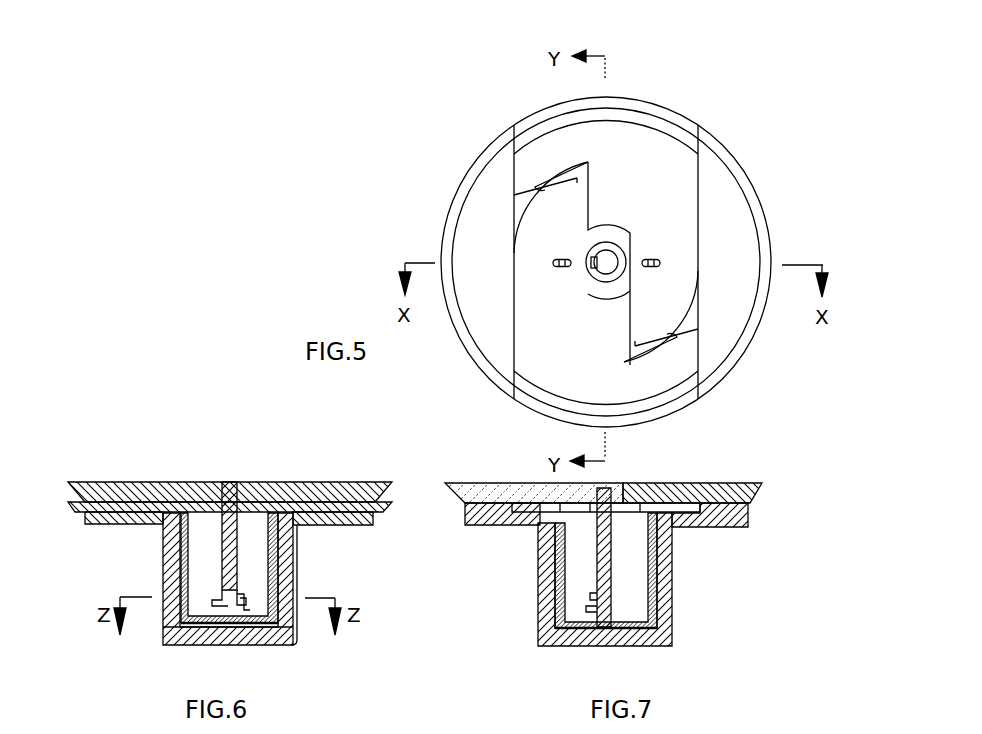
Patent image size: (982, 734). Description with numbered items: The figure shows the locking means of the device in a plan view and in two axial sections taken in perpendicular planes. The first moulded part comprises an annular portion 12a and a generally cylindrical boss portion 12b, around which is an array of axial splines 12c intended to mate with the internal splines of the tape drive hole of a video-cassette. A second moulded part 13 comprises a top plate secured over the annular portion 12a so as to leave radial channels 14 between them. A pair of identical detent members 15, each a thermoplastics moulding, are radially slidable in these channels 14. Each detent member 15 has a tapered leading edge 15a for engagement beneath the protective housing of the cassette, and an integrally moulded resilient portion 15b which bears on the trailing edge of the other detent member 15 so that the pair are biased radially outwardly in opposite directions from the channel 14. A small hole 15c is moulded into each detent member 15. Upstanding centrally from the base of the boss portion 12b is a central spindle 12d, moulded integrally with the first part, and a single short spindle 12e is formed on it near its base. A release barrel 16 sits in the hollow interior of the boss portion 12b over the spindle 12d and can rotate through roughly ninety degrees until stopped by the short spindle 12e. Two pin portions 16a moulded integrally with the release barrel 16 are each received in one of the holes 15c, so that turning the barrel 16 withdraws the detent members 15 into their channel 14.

In FIG. 6, the annular portion 12a is at (362, 526).
In FIG. 6, the boss portion 12b is at (287, 578).
In FIG. 7, the boss portion 12b is at (660, 566).
In FIG. 6, the axial splines 12c is at (297, 632).
In FIG. 6, the central spindle 12d is at (230, 537).
In FIG. 7, the short spindle 12e is at (600, 595).
In FIG. 6, the second moulded part 13 is at (150, 482).
In FIG. 5, the radial channels 14 is at (688, 302).
In FIG. 7, the radial channels 14 is at (699, 527).
In FIG. 5, the detent members 15 is at (658, 140).
In FIG. 5, the tapered leading edge 15a is at (637, 107).
In FIG. 5, the resilient portion 15b is at (577, 180).
In FIG. 5, the hole 15c is at (660, 262).
In FIG. 7, the hole 15c is at (648, 483).
In FIG. 6, the release barrel 16 is at (277, 555).
In FIG. 7, the release barrel 16 is at (606, 570).
In FIG. 7, the pin portions 16a is at (676, 483).